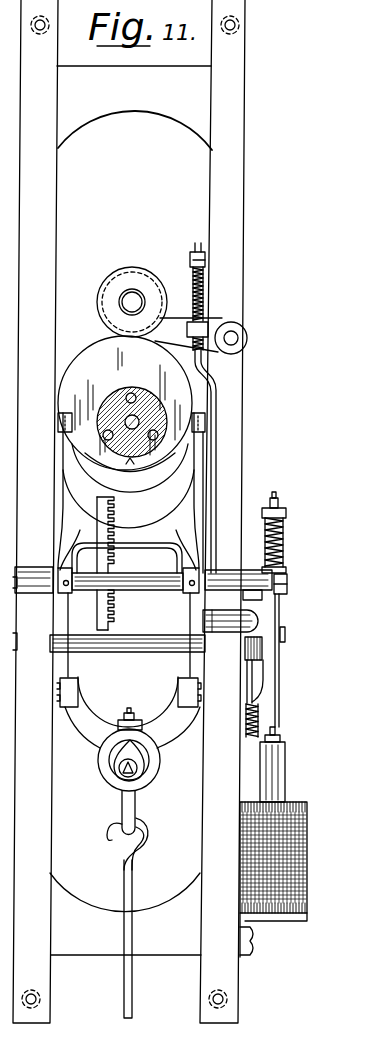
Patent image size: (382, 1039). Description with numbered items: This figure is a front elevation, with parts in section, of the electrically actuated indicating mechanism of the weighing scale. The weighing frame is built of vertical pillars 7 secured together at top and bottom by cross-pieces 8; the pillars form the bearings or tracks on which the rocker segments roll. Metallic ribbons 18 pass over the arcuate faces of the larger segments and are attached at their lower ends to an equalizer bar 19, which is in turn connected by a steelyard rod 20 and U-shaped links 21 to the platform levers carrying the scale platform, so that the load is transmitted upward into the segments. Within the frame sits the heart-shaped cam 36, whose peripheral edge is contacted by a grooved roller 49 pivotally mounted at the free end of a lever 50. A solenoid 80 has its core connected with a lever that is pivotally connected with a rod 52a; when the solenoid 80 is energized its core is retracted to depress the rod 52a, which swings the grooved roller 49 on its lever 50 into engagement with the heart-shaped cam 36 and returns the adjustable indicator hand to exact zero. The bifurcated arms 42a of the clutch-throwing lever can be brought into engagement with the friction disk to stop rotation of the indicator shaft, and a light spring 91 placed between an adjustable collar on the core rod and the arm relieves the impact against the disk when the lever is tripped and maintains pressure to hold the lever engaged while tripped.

The vertical pillars 7 is at (222, 183).
The cross-pieces 8 is at (158, 102).
The grooved roller 49 is at (140, 273).
The lever arm 50 is at (170, 310).
The rod 52a is at (210, 464).
The heart-shaped cam 36 is at (102, 363).
The bifurcated arms 42a is at (168, 522).
The metallic ribbons 18 is at (182, 660).
The equalizer bar 19 is at (100, 722).
The U-shaped links 21 is at (138, 803).
The steelyard rod 20 is at (135, 993).
The light spring 91 is at (284, 544).
The solenoid 80 is at (308, 825).